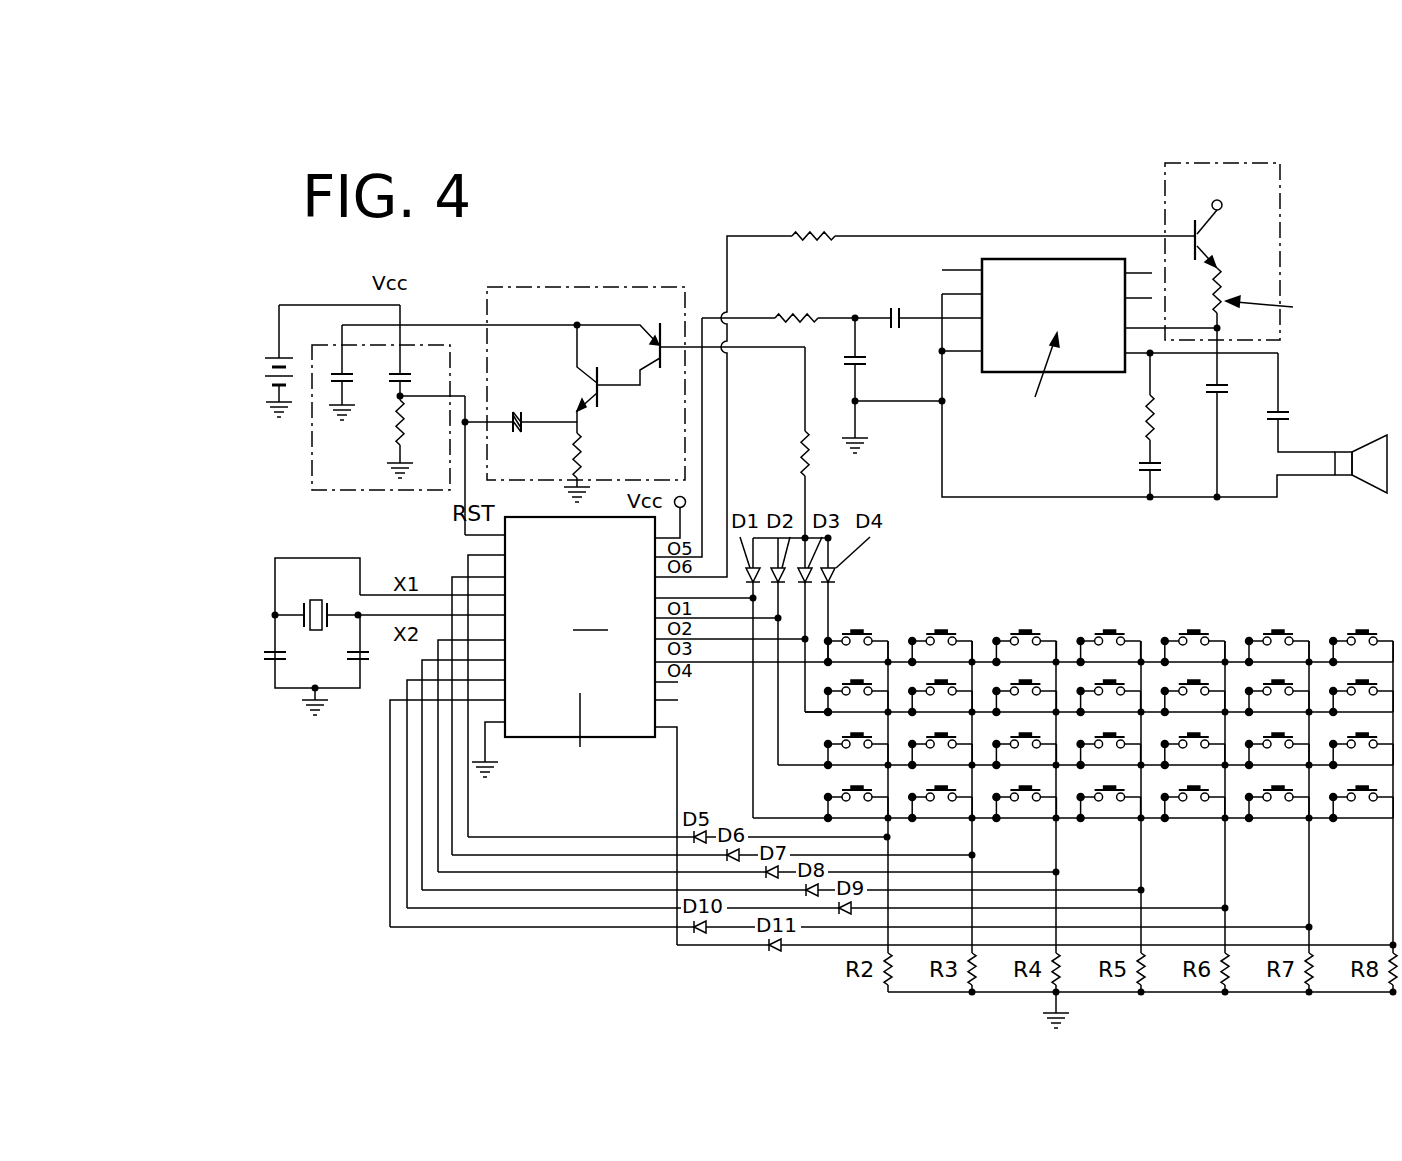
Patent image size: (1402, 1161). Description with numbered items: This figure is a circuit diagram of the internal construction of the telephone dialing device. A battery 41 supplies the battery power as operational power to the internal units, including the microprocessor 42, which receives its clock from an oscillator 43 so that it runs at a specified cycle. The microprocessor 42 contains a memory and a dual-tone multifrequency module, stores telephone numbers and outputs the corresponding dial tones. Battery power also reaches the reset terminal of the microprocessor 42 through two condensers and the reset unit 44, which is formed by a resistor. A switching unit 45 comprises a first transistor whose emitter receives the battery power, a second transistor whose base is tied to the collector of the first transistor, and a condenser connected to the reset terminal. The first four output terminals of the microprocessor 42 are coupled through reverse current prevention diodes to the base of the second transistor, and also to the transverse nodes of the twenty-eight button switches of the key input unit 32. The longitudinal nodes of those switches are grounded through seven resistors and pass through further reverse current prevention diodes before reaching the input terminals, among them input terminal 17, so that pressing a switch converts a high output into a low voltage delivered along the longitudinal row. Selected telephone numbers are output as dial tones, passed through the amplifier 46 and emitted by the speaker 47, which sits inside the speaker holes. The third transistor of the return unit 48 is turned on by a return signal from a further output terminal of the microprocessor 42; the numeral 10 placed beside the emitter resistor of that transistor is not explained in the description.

The resistor R3 10 is at (1269, 304).
The input terminal 17 is at (682, 829).
The key input unit 32 is at (1061, 618).
The battery 41 is at (258, 367).
The microprocessor 42 is at (569, 667).
The oscillator 43 is at (291, 557).
The reset unit 44 is at (433, 343).
The switching unit 45 is at (583, 285).
The amplifier 46 is at (1045, 258).
The speaker 47 is at (1340, 452).
The return unit 48 is at (1251, 274).